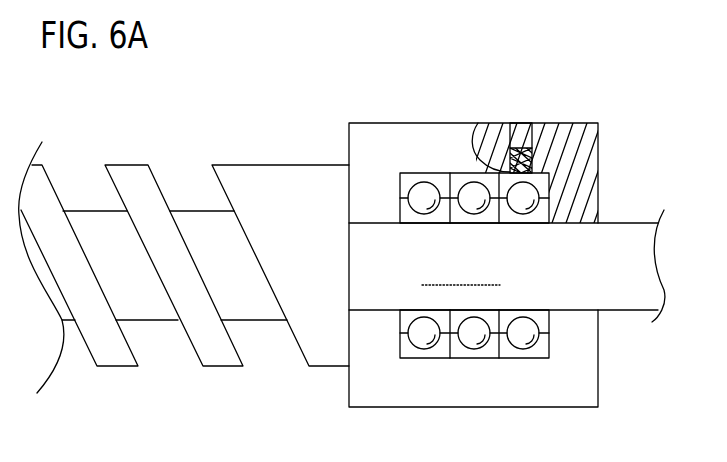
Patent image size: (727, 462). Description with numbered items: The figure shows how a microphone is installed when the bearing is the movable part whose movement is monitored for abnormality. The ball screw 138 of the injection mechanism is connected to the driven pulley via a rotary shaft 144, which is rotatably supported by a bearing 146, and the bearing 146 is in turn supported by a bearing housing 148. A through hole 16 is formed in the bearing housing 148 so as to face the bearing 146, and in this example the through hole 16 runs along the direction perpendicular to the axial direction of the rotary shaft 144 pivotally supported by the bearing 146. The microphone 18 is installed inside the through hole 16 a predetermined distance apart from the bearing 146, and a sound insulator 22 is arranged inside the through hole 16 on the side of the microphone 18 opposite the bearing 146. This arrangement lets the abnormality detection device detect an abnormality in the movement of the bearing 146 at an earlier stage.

The ball screw 138 is at (117, 368).
The bearing housing 148 is at (404, 143).
The rotary shaft 144 is at (617, 238).
The bearing 146 is at (441, 212).
The through hole 16 is at (517, 165).
The sound insulator 22 is at (516, 140).
The microphone 18 is at (510, 156).